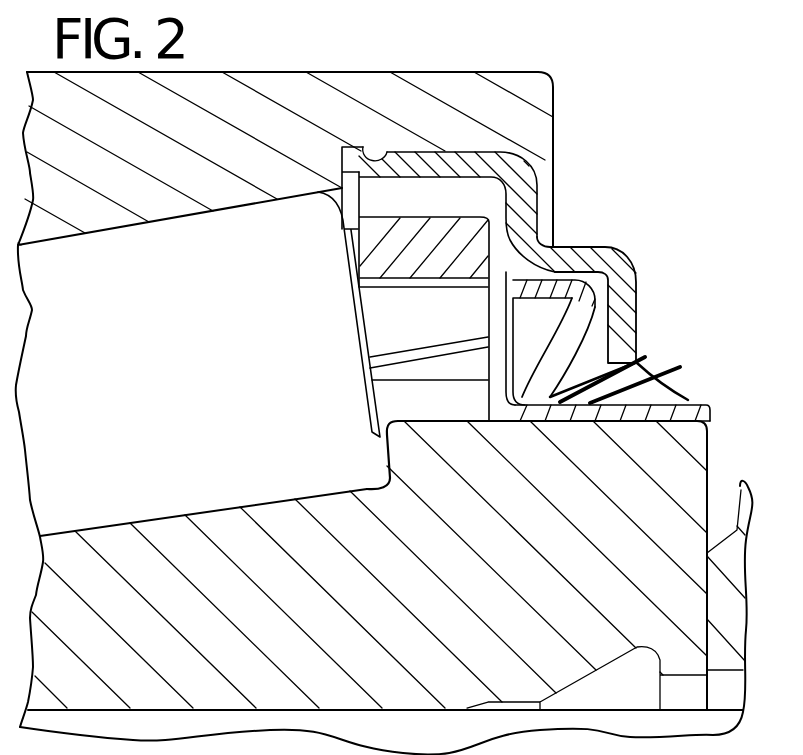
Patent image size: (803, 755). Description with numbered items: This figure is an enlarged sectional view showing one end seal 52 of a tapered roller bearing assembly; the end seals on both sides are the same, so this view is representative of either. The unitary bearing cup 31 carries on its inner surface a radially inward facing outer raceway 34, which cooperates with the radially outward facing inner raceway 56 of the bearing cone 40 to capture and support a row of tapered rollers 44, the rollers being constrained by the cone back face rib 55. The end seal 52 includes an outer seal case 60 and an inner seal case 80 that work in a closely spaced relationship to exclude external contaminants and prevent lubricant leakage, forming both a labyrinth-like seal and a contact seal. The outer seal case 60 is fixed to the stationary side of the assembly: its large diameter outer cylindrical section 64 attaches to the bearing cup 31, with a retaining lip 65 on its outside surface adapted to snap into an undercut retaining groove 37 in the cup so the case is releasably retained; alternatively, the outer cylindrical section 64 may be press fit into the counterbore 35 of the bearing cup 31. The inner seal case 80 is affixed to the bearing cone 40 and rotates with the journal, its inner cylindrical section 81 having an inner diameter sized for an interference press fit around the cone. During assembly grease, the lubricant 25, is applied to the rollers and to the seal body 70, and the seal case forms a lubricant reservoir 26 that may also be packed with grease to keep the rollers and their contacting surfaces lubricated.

The lubricant 25 is at (512, 356).
The lubricant reservoir 26 is at (545, 310).
The bearing cup 31 is at (533, 72).
The outer raceway 34 is at (148, 222).
The counterbore 35 is at (332, 156).
The undercut retaining groove 37 is at (347, 149).
The bearing cone 40 is at (343, 710).
The tapered roller 44 is at (246, 352).
The end seal 52 is at (577, 227).
The cone back face rib 55 is at (387, 456).
The inner raceway 56 is at (208, 499).
The outer seal case 60 is at (605, 248).
The outer cylindrical section 64 is at (442, 164).
The retaining lip 65 is at (387, 152).
The seal body 70 is at (662, 388).
The inner seal case 80 is at (696, 403).
The inner cylindrical section 81 is at (599, 415).